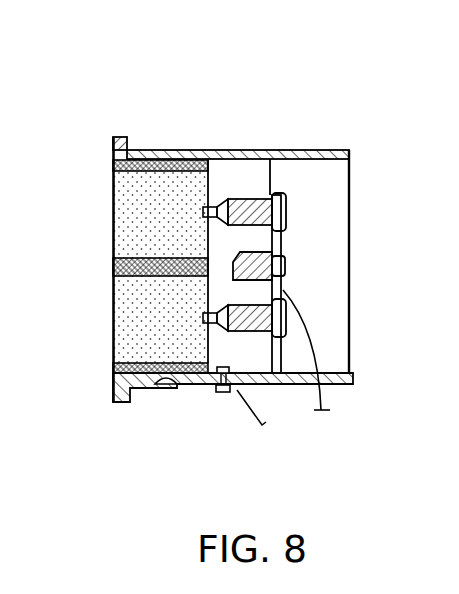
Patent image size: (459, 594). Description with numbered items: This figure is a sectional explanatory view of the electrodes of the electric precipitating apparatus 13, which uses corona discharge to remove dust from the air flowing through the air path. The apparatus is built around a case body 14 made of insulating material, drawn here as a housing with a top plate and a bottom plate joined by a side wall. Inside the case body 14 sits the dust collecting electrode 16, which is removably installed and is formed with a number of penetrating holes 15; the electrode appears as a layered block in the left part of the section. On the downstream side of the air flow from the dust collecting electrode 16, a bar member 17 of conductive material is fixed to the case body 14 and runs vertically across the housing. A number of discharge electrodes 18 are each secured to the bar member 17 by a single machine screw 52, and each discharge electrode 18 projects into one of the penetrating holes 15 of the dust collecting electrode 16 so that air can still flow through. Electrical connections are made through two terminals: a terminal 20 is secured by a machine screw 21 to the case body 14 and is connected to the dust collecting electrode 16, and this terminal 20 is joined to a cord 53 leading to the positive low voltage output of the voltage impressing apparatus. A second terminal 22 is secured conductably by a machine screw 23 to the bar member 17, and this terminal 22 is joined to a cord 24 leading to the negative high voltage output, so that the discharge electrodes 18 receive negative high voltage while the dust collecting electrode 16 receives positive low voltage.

The electric precipitating apparatus 13 is at (391, 98).
The case body 14 is at (253, 150).
The penetrating holes 15 is at (127, 172).
The dust collecting electrode 16 is at (125, 268).
The bar member 17 is at (285, 196).
The discharge electrode 18 is at (207, 212).
The terminal 20 is at (175, 390).
The machine screw 21 is at (222, 392).
The terminal 22 is at (287, 255).
The machine screw 23 is at (285, 285).
The cord 24 is at (317, 347).
The machine screw 52 is at (286, 210).
The cord 53 is at (238, 392).